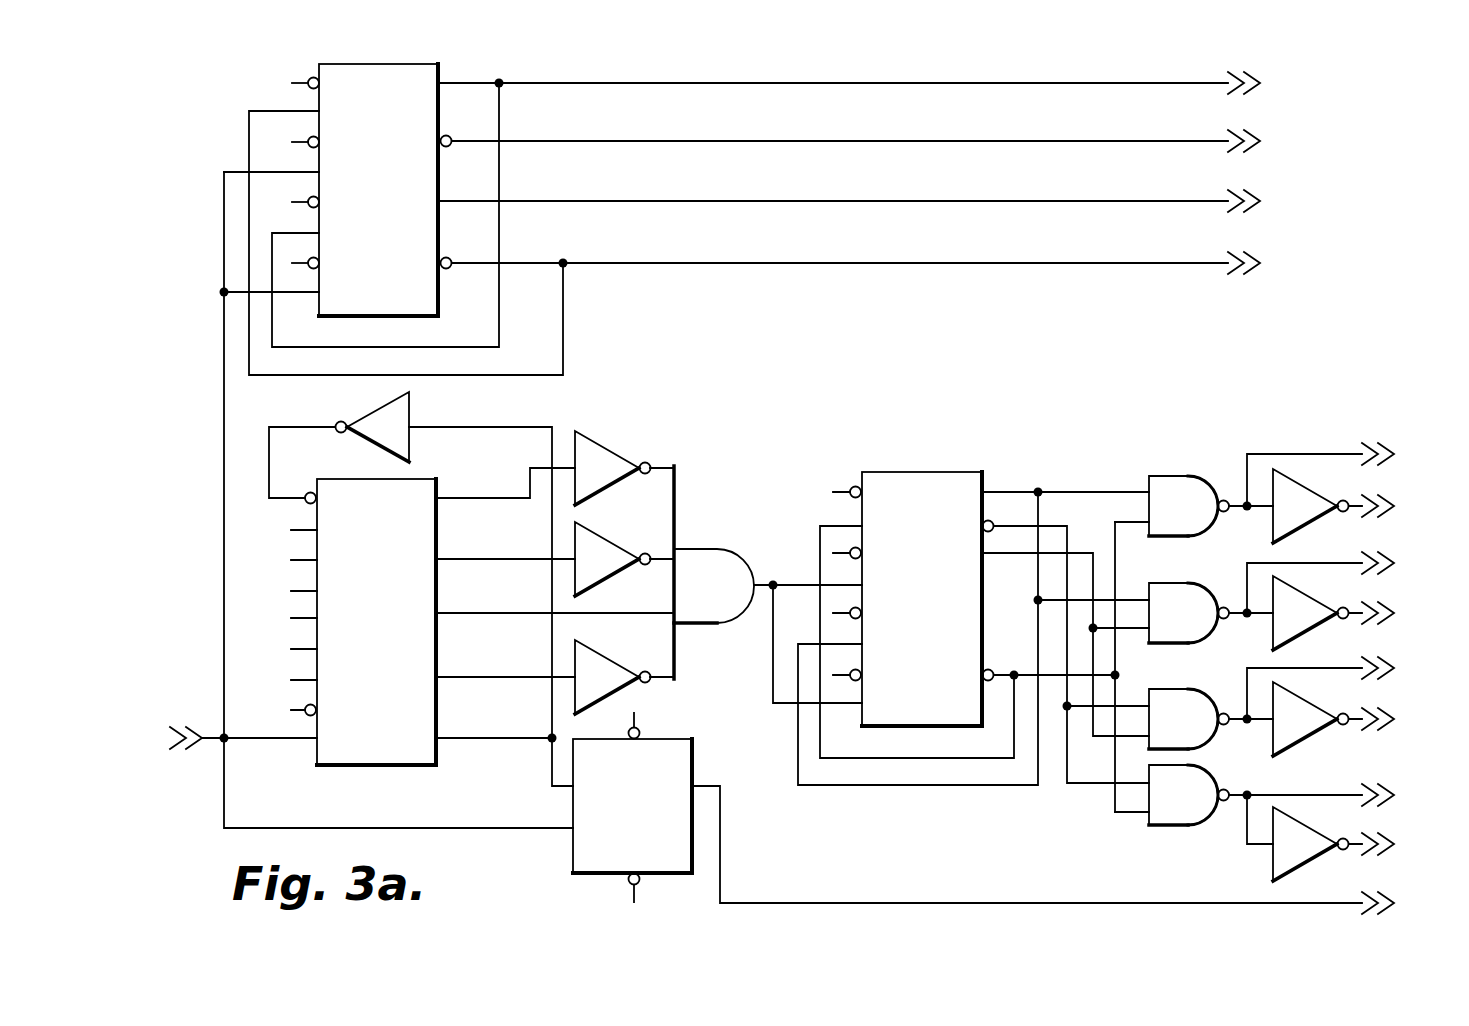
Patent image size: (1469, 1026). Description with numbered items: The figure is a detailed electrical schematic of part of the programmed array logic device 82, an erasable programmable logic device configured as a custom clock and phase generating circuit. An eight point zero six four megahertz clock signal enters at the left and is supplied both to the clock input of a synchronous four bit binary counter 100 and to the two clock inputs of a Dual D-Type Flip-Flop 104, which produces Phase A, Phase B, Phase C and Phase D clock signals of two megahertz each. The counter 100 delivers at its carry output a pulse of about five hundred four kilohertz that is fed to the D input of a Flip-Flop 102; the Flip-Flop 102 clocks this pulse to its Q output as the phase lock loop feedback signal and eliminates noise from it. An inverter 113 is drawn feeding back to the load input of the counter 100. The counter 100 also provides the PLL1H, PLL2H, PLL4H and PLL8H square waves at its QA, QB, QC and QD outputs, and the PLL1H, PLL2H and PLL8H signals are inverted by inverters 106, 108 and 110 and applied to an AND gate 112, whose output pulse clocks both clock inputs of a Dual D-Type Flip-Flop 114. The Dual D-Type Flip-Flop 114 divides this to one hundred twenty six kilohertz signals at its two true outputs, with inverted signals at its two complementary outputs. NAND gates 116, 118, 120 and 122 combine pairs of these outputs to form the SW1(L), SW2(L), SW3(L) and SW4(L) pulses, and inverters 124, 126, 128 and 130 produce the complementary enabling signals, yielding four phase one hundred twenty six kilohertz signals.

The programmed array logic device 82 is at (918, 78).
The synchronous four bit binary counter 100 is at (380, 766).
The Flip-Flop 102 is at (667, 739).
The Dual D-Type Flip-Flop 104 is at (440, 66).
The inverter 106 is at (603, 455).
The inverter 108 is at (603, 545).
The inverter 110 is at (603, 660).
The AND gate 112 is at (722, 550).
The inverter 113 is at (409, 400).
The Dual D-Type Flip-Flop 114 is at (923, 472).
The NAND gate 116 is at (1172, 476).
The NAND gate 118 is at (1172, 583).
The NAND gate 120 is at (1172, 689).
The NAND gate 122 is at (1190, 767).
The inverter 124 is at (1298, 490).
The inverter 126 is at (1298, 597).
The inverter 128 is at (1298, 703).
The inverter 130 is at (1298, 828).